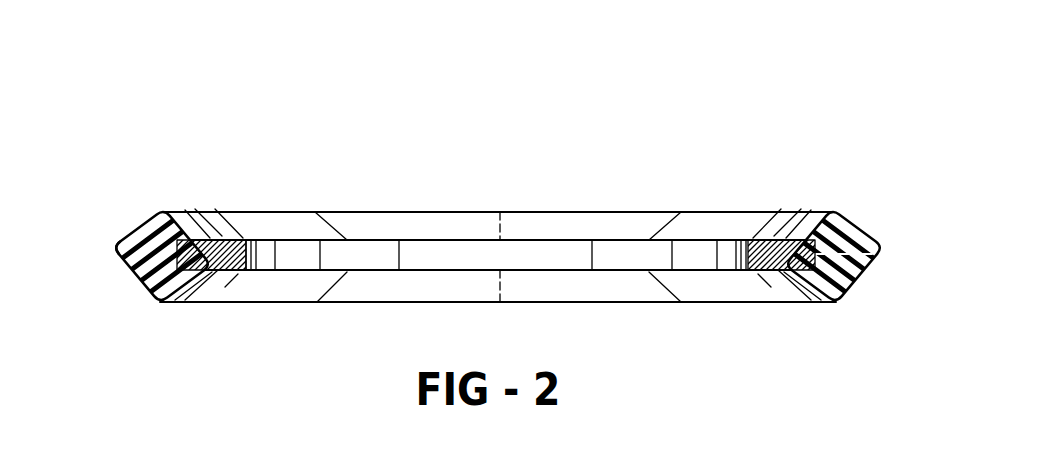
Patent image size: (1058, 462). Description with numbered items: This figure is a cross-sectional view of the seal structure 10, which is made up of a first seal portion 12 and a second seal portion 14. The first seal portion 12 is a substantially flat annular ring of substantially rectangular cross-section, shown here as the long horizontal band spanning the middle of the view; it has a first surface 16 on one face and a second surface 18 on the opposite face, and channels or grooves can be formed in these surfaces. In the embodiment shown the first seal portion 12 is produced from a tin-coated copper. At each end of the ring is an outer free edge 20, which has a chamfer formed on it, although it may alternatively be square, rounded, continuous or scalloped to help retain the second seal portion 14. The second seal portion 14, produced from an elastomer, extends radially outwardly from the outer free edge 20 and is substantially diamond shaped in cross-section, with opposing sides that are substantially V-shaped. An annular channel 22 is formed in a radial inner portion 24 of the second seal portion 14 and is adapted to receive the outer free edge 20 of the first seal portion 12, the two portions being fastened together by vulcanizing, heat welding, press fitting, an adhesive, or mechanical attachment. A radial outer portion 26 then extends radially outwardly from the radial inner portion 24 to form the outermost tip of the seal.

The seal structure 10 is at (768, 161).
The first seal portion 12 is at (250, 255).
The second seal portion 14 is at (162, 212).
The first surface 16 is at (763, 242).
The second surface 18 is at (770, 272).
The outer free edge 20 is at (864, 230).
The annular channel 22 is at (175, 255).
The radial inner portion 24 is at (162, 303).
The radial outer portion 26 is at (113, 249).